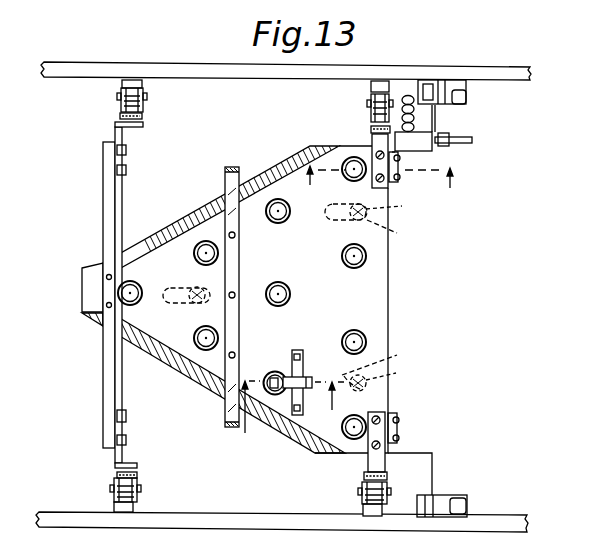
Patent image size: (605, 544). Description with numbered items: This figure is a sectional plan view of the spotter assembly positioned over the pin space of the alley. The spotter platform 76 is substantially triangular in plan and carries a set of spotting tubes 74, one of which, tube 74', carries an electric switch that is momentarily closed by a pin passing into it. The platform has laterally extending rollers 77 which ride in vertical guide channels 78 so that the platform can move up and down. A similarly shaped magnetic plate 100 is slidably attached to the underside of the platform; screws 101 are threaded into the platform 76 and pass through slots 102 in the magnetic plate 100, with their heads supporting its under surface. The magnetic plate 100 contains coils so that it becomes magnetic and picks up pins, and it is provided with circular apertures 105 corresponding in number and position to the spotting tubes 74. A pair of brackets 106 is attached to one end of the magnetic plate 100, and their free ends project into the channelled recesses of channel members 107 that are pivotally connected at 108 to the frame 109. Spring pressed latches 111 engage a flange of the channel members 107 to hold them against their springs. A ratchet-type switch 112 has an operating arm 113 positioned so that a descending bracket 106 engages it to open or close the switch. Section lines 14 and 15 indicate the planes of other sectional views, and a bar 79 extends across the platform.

The section line 14- 14 is at (296, 418).
The section line 15- 15 is at (373, 183).
The spotting tubes 74 is at (264, 298).
The spotting tube 74' is at (287, 382).
The spotter platform 76 is at (390, 313).
The rollers 77 is at (147, 98).
The vertical guide channels 78 is at (121, 85).
The guide bar 79 is at (232, 168).
The magnetic plate 100 is at (200, 214).
The screws 101 is at (310, 294).
The slots 102 is at (295, 297).
The circular apertures 105 is at (278, 306).
The brackets 106 is at (434, 153).
The channel members 107 is at (422, 72).
The pivotal connections 108 is at (447, 106).
The frame 109 is at (498, 67).
The spring pressed latches 111 is at (468, 97).
The switch 112 is at (372, 139).
The operating arm 113 is at (473, 142).